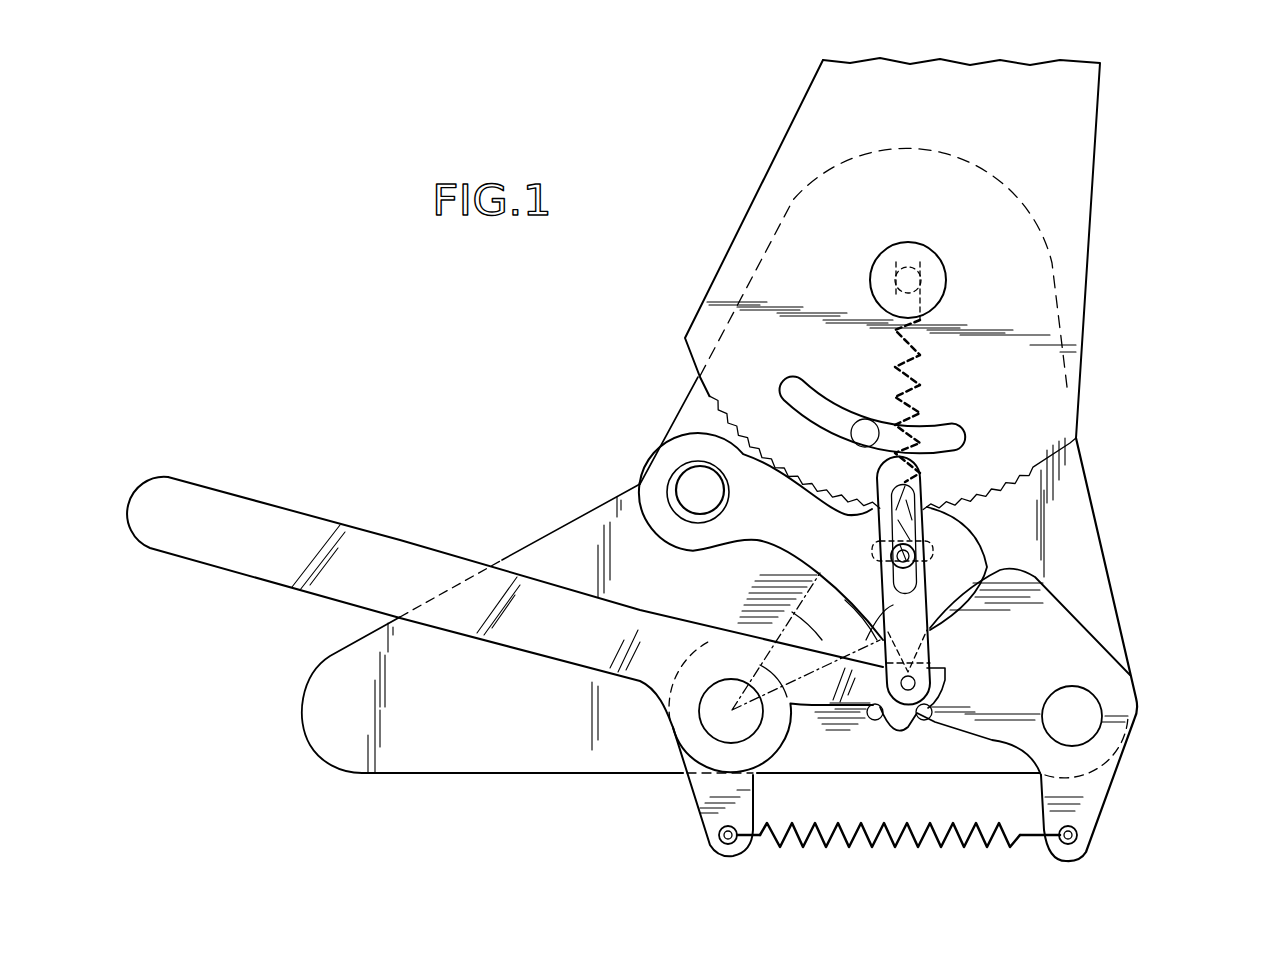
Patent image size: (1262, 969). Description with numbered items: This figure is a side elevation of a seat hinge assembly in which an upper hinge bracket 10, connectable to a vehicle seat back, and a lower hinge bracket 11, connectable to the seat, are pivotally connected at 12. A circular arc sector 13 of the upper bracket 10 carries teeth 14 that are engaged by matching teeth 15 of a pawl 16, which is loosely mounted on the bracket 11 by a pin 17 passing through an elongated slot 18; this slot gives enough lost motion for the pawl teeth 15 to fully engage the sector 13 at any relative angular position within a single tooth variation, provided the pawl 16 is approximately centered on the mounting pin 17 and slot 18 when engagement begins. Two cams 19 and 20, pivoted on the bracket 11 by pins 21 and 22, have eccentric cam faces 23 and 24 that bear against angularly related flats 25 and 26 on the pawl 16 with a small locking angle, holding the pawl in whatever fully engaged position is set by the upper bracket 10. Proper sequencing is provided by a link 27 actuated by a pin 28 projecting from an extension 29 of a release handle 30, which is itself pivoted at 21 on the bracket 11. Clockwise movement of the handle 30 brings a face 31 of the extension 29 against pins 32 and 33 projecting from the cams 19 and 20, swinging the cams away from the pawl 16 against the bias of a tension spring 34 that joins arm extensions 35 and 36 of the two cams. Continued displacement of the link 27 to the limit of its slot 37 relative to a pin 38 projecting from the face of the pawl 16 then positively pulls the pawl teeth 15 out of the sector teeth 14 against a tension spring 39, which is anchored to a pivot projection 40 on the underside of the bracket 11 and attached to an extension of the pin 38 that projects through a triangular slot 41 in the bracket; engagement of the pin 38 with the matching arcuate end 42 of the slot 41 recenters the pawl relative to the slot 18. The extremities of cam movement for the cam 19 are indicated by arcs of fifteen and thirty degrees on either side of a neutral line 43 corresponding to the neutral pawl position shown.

The upper hinge bracket 10 is at (1124, 212).
The lower hinge bracket 11 is at (1122, 564).
The pivotal connection 12 is at (910, 278).
The circular arc sector 13 is at (998, 500).
The sector teeth 14 is at (868, 507).
The pawl teeth 15 is at (949, 496).
The pawl 16 is at (806, 531).
The mounting pin 17 is at (698, 493).
The elongated slot 18 is at (667, 484).
The cam 19 is at (746, 603).
The cam 20 is at (1088, 612).
The pin 21 is at (735, 706).
The pin 22 is at (1075, 709).
The eccentric cam face 23 is at (895, 622).
The eccentric cam face 24 is at (950, 590).
The pawl flat 25 is at (857, 685).
The pawl flat 26 is at (933, 645).
The link 27 is at (921, 493).
The pin 28 is at (916, 683).
The extension 29 is at (843, 677).
The release handle 30 is at (386, 540).
The face 31 is at (895, 734).
The pin 32 is at (929, 719).
The pin 33 is at (871, 719).
The tension spring 34 is at (863, 828).
The arm extension 35 is at (757, 798).
The arm extension 36 is at (1052, 809).
The slot 37 is at (880, 500).
The pin 38 is at (897, 561).
The tension spring 39 is at (922, 356).
The pivot projection 40 is at (948, 282).
The triangular slot 41 is at (922, 544).
The arcuate end 42 is at (942, 587).
The neutral line 43 is at (738, 712).